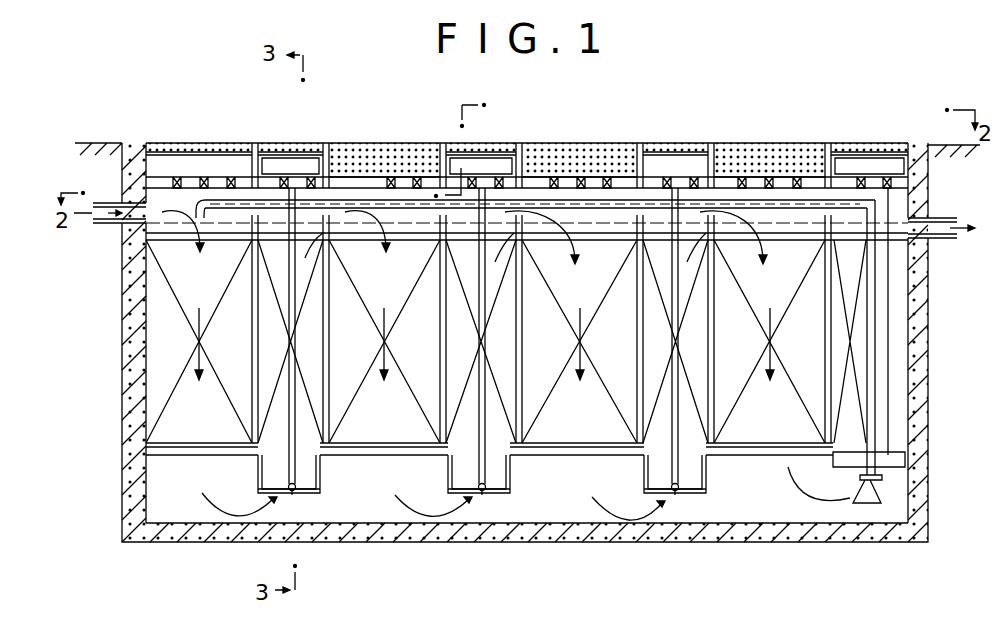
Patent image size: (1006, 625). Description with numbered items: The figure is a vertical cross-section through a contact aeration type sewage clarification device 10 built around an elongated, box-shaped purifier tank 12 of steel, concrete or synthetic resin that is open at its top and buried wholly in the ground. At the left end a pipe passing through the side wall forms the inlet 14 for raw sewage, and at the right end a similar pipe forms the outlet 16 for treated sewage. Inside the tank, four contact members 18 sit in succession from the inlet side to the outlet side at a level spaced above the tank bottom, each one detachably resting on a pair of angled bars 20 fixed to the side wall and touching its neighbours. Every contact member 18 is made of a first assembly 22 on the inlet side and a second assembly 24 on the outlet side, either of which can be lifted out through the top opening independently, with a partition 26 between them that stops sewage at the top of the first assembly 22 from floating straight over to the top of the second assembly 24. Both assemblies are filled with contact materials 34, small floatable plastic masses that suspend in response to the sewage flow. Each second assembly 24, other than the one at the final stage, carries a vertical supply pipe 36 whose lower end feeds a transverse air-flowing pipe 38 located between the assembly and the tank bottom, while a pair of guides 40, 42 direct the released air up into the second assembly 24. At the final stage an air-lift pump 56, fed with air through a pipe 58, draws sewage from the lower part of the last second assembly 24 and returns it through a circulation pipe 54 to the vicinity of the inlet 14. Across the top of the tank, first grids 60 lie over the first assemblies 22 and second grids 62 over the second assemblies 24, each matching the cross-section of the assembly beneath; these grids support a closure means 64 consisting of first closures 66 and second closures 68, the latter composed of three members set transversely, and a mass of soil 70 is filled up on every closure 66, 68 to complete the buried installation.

The clarification device 10 is at (872, 125).
The purifier tank 12 is at (125, 347).
The inlet 14 is at (110, 225).
The outlet 16 is at (933, 247).
The contact member 18 is at (172, 452).
The angled bar 20 is at (140, 462).
The first assembly 22 is at (207, 430).
The second assembly 24 is at (270, 433).
The partition 26 is at (255, 234).
The contact material 34 is at (182, 403).
The supply pipe 36 is at (485, 382).
The air-flowing pipe 38 is at (287, 495).
The guide 40 is at (255, 488).
The guide 42 is at (318, 482).
The circulation pipe 54 is at (620, 210).
The air-lift pump 56 is at (880, 483).
The air supply pipe 58 is at (887, 343).
The first grid 60 is at (177, 175).
The second grid 62 is at (280, 180).
The closure means 64 is at (385, 149).
The first closure 66 is at (195, 160).
The second closure 68 is at (317, 150).
The soil 70 is at (240, 148).